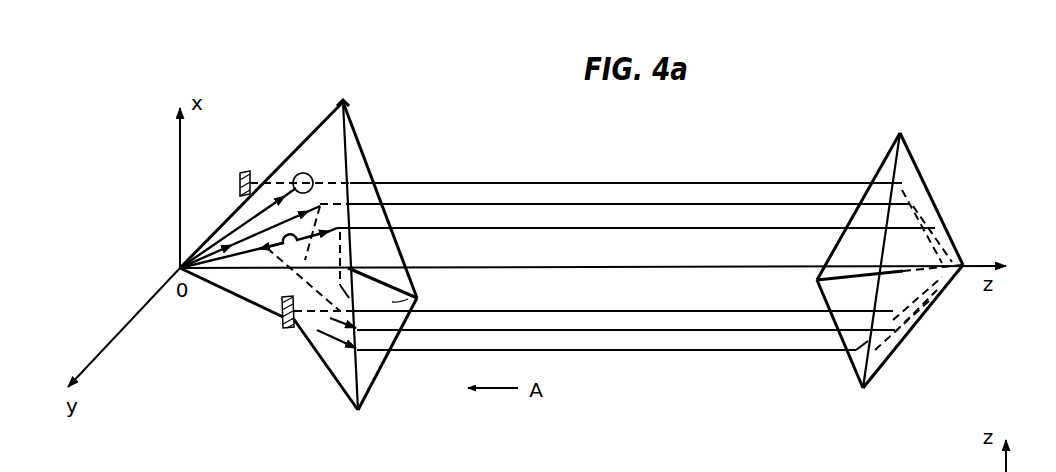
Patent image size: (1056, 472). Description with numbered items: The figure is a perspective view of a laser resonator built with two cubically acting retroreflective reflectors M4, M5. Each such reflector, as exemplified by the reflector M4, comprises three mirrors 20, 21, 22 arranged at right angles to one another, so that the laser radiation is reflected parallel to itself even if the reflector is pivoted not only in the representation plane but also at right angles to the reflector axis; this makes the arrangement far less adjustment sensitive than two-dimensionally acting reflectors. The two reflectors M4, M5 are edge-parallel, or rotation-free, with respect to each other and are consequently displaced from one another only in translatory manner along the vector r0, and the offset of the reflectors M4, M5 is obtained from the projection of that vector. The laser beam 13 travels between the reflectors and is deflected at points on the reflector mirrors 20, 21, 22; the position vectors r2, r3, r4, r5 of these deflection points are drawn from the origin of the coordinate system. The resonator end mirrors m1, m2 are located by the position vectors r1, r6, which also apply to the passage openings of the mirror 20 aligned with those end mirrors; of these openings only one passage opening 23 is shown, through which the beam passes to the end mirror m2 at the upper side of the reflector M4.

The laser beam 13 is at (681, 354).
The mirror 20 is at (347, 385).
The mirror 21 is at (364, 165).
The mirror 22 is at (419, 298).
The passage opening 23 is at (303, 173).
The retroreflective reflector M4 is at (345, 101).
The retroreflective reflector M5 is at (903, 133).
The resonator end mirror m1 is at (283, 330).
The resonator end mirror m2 is at (241, 170).
The vector r0 is at (210, 252).
The position vector r1 is at (232, 292).
The position vector r2 is at (342, 247).
The position vector r3 is at (375, 340).
The position vector r4 is at (320, 186).
The position vector r5 is at (337, 343).
The position vector r6 is at (242, 242).